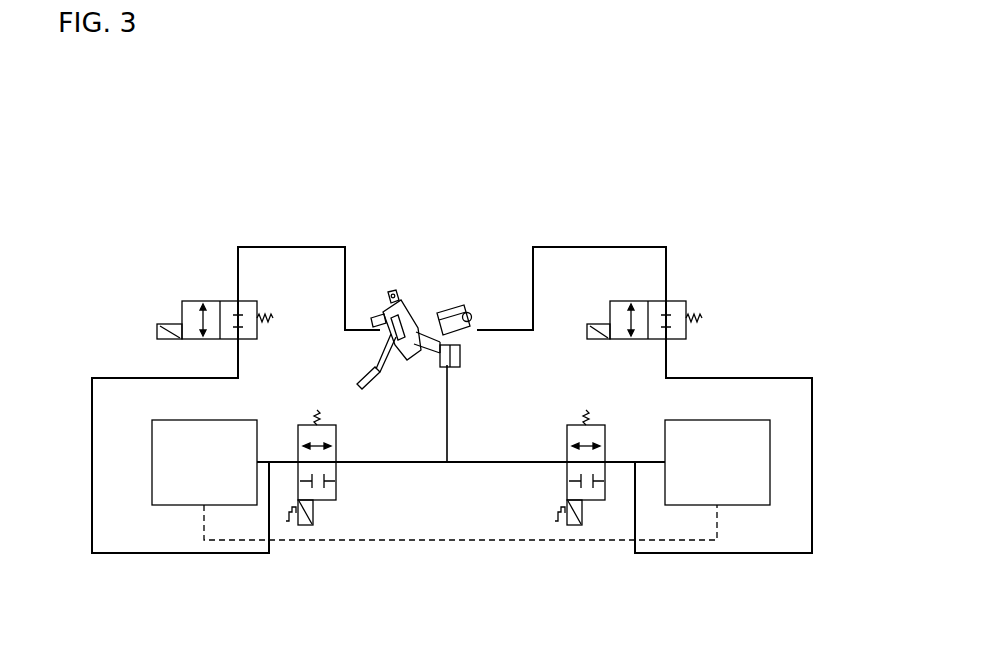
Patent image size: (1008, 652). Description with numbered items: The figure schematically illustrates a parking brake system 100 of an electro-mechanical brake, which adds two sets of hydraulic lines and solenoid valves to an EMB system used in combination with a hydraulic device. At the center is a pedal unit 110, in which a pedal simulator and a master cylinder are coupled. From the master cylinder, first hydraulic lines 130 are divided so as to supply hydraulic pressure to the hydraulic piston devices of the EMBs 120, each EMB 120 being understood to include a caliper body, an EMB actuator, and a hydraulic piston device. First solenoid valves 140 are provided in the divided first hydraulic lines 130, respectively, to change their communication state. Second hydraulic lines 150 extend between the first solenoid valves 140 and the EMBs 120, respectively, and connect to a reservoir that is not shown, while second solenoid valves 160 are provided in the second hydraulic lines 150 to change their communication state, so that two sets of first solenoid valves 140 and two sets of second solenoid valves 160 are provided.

The parking brake system 100 is at (503, 107).
The pedal unit 110 is at (411, 540).
The EMB 120 is at (697, 493).
The first hydraulic line 130 is at (377, 461).
The first solenoid valve 140 is at (336, 474).
The second hydraulic line 150 is at (92, 457).
The second solenoid valve 160 is at (225, 302).